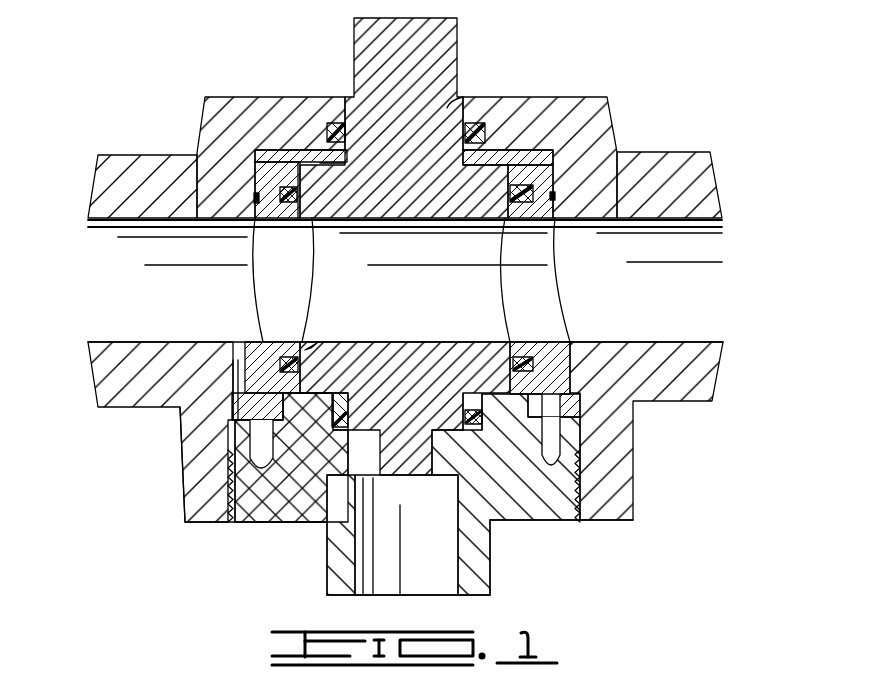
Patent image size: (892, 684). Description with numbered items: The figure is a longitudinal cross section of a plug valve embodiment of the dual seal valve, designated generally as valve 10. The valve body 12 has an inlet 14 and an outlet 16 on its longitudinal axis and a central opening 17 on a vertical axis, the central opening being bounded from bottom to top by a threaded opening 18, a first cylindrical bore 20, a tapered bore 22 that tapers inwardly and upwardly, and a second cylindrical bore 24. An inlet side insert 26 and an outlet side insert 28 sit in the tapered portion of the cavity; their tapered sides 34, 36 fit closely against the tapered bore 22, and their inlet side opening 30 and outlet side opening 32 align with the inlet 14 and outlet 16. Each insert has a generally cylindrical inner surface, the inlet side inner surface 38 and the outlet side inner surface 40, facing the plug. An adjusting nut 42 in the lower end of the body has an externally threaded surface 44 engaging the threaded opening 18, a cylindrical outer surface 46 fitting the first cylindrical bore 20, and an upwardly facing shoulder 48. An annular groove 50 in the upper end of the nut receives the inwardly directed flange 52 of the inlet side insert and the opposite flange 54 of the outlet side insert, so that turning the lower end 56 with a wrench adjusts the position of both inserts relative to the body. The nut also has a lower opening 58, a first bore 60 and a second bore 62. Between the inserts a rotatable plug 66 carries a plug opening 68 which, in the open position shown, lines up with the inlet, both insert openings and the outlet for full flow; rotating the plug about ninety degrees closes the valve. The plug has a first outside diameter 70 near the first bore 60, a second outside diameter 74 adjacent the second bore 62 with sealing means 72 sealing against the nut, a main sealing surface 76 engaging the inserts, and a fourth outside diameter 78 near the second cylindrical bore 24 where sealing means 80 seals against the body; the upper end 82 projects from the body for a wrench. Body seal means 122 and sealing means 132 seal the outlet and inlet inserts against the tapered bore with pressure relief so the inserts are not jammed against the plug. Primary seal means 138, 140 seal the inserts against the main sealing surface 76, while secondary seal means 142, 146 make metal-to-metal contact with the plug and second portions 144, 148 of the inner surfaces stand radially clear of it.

The plug valve 10 is at (633, 82).
The valve body 12 is at (670, 167).
The inlet 14 is at (117, 340).
The outlet 16 is at (707, 337).
The central opening 17 is at (561, 538).
The threaded opening 18 is at (557, 517).
The first cylindrical bore 20 is at (600, 433).
The tapered bore 22 is at (560, 410).
The second cylindrical bore 24 is at (447, 97).
The inlet side insert 26 is at (273, 177).
The outlet side insert 28 is at (533, 170).
The inlet side opening 30 is at (262, 333).
The outlet side opening 32 is at (543, 340).
The tapered side 34 is at (253, 173).
The tapered side 36 is at (603, 150).
The inlet side inner surface 38 is at (312, 343).
The outlet side inner surface 40 is at (493, 343).
The adjusting nut 42 is at (500, 475).
The externally threaded surface 44 is at (600, 482).
The cylindrical outer surface 46 is at (600, 455).
The upwardly facing shoulder 48 is at (633, 420).
The annular groove 50 is at (245, 455).
The inwardly directed flange 52 is at (240, 420).
The inwardly directed flange 54 is at (540, 395).
The lower end 56 is at (470, 582).
The lower opening 58 is at (455, 545).
The first bore 60 is at (448, 485).
The second bore 62 is at (415, 455).
The plug 66 is at (307, 230).
The plug opening 68 is at (368, 342).
The first outside diameter 70 is at (290, 520).
The sealing means 72 is at (258, 522).
The second outside diameter 74 is at (228, 520).
The main sealing surface 76 is at (260, 398).
The fourth outside diameter 78 is at (343, 110).
The sealing means 80 is at (327, 110).
The upper end 82 is at (428, 37).
The body seal means 122 is at (582, 202).
The sealing means 132 is at (253, 198).
The primary valve seal means 138 is at (323, 225).
The primary valve seal means 140 is at (487, 222).
The secondary seal means 142 is at (311, 220).
The second portion 144 is at (327, 180).
The secondary seal means 146 is at (503, 222).
The second portion 148 is at (487, 143).